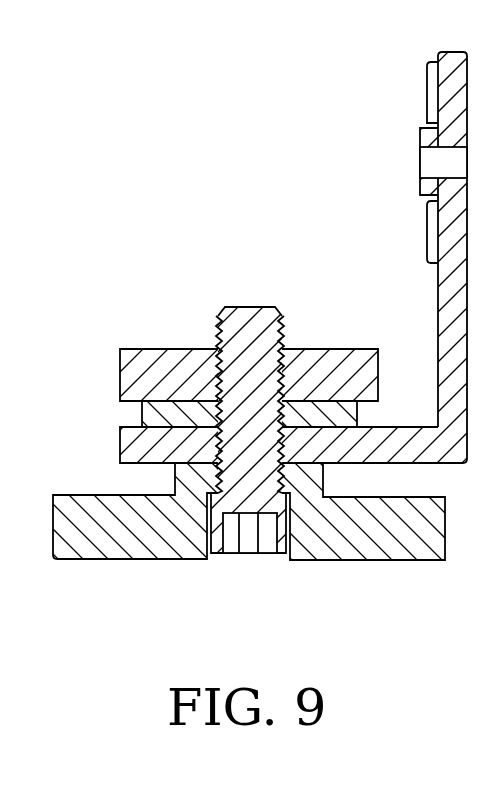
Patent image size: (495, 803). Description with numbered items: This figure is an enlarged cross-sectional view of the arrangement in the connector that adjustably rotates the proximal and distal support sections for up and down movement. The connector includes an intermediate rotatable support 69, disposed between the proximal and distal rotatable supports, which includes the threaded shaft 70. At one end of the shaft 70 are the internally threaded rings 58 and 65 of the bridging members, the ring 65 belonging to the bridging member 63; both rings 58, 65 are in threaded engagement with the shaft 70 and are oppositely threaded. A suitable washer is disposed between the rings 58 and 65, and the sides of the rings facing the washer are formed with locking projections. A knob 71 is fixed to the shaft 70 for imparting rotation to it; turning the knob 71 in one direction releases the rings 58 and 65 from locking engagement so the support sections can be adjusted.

The internally threaded ring 58 is at (144, 356).
The bridging member 63 is at (412, 137).
The internally threaded ring 65 is at (120, 448).
The intermediate rotatable support 69 is at (251, 576).
The threaded shaft 70 is at (256, 306).
The knob 71 is at (87, 550).